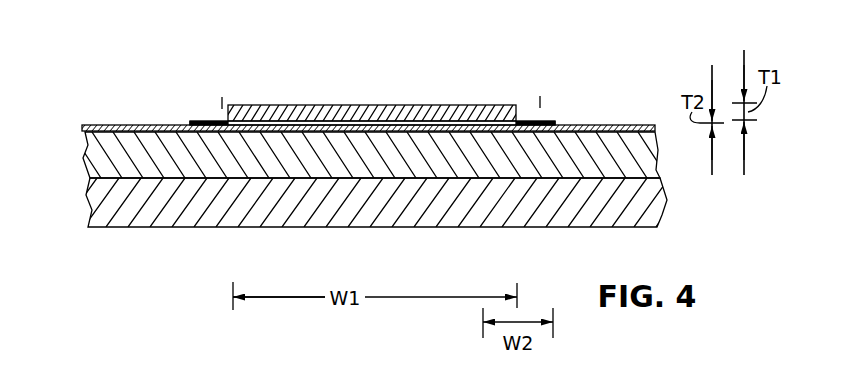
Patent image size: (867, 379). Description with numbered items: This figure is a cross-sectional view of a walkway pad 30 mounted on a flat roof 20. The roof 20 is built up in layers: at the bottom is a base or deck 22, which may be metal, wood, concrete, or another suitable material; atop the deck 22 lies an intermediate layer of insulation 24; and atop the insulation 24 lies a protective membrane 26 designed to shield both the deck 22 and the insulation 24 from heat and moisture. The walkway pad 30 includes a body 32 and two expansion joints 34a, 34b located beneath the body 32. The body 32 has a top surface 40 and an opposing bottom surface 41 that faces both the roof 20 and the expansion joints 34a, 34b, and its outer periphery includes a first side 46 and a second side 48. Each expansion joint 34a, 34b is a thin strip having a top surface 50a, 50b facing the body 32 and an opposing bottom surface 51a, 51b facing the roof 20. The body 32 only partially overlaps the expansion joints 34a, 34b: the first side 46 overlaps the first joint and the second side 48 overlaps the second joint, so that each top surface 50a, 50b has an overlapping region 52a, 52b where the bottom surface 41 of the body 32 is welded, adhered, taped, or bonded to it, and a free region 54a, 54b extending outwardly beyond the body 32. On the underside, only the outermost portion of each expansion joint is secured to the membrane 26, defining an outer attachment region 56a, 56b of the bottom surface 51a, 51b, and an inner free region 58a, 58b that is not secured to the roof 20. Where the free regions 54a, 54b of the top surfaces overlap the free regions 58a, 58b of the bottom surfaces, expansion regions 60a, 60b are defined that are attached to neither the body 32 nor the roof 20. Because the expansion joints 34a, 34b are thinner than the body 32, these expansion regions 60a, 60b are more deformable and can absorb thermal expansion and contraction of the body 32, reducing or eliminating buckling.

The roof 20 is at (670, 203).
The deck 22 is at (99, 207).
The insulation 24 is at (88, 175).
The protective membrane 26 is at (82, 127).
The walkway pad 30 is at (633, 56).
The body 32 is at (370, 114).
The first expansion joint 34a is at (190, 123).
The second expansion joint 34b is at (556, 122).
The top surface 40 is at (333, 105).
The bottom surface 41 is at (414, 123).
The first side 46 is at (229, 105).
The second side 48 is at (514, 105).
The top surface of first expansion joint 50a is at (192, 122).
The top surface of second expansion joint 50b is at (548, 124).
The bottom surface of first expansion joint 51a is at (193, 133).
The bottom surface of second expansion joint 51b is at (562, 133).
The first overlapping region 52a is at (259, 108).
The second overlapping region 52b is at (489, 108).
The free region of first expansion joint top surface 54a is at (197, 100).
The free region of second expansion joint top surface 54b is at (552, 96).
The outer attachment region 56a is at (203, 157).
The outer attachment region 56b is at (538, 137).
The inner free region 58a is at (239, 137).
The inner free region 58b is at (498, 137).
The expansion region 60a is at (221, 108).
The expansion region 60b is at (531, 108).